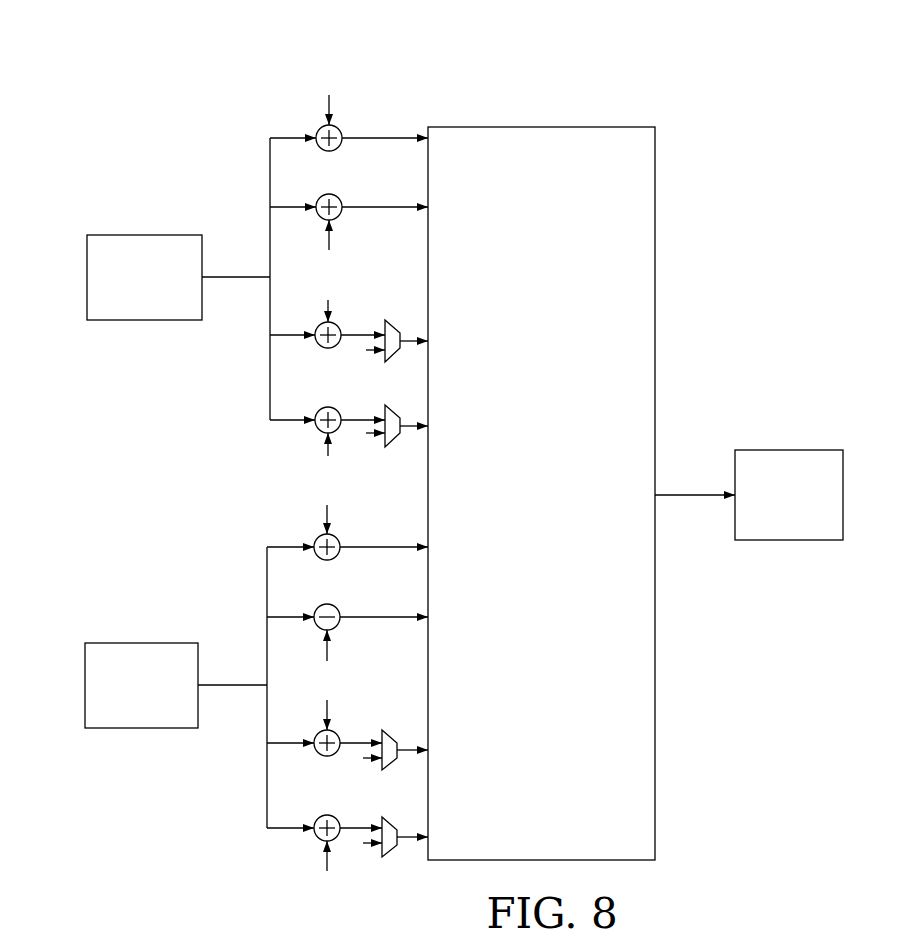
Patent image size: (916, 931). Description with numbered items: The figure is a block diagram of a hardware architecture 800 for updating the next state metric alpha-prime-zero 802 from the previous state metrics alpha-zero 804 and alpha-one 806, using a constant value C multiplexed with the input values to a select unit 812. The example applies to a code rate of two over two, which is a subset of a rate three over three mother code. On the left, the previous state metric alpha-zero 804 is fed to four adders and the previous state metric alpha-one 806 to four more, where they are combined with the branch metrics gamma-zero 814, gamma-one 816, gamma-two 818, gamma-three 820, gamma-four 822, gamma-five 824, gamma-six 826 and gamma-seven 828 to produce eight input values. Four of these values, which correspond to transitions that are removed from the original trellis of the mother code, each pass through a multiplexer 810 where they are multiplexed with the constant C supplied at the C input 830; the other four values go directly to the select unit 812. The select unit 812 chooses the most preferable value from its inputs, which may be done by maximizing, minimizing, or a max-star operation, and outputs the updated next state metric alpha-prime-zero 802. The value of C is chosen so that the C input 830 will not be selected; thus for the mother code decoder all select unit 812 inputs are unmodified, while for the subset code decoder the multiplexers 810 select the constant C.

The hardware architecture 800 is at (727, 205).
The next state metric α'0 802 is at (788, 450).
The previous state metric α0 804 is at (145, 320).
The previous state metric α1 806 is at (142, 643).
The multiplexer 810 is at (394, 325).
The select unit 812 is at (577, 600).
The branch metric γ0 814 is at (322, 100).
The branch metric γ1 816 is at (333, 241).
The branch metric γ2 818 is at (321, 299).
The branch metric γ3 820 is at (328, 456).
The branch metric γ4 822 is at (330, 516).
The branch metric γ5 824 is at (331, 652).
The branch metric γ6 826 is at (330, 709).
The branch metric γ7 828 is at (320, 867).
The C input 830 is at (369, 353).